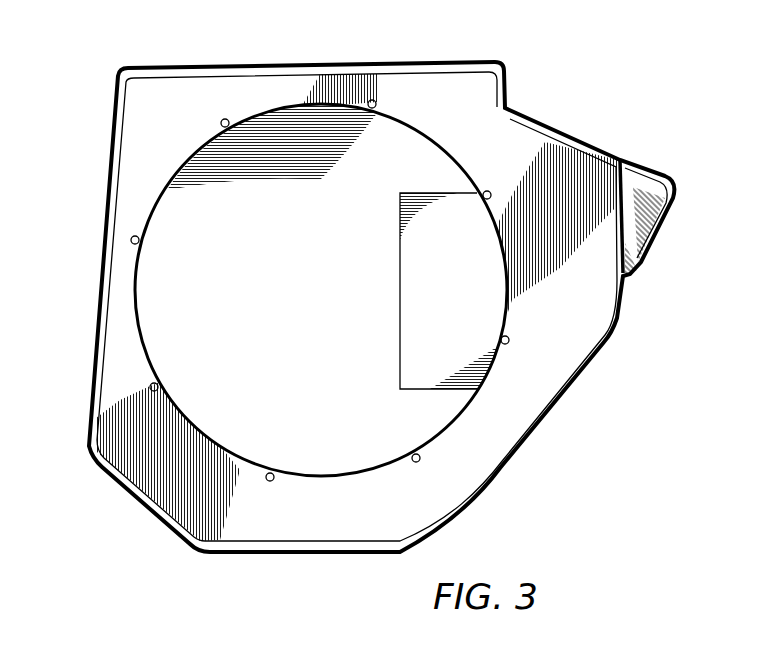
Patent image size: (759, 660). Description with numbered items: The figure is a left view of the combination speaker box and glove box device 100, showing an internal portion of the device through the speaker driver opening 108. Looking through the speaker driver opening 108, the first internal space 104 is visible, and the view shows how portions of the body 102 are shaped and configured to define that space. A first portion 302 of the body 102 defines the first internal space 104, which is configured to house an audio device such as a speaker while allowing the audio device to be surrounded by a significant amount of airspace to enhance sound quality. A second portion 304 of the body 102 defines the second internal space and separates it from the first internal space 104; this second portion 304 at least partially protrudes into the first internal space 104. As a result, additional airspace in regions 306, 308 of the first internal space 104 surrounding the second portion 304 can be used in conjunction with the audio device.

The combination speaker box and glove box device 100 is at (652, 73).
The body 102 is at (591, 371).
The first internal space 104 is at (252, 134).
The speaker driver opening 108 is at (140, 260).
The first portion 302 is at (305, 302).
The second portion 304 is at (468, 302).
The region 306 is at (437, 170).
The region 308 is at (433, 417).